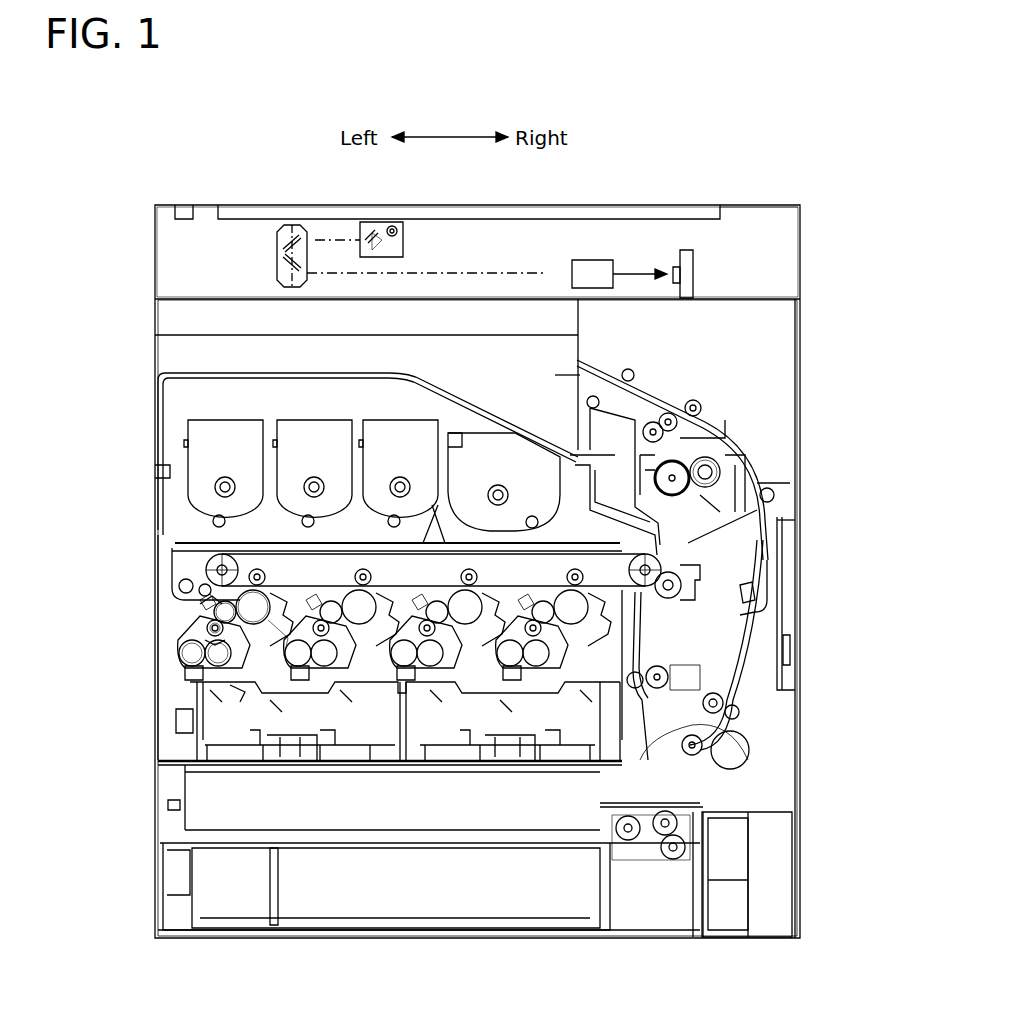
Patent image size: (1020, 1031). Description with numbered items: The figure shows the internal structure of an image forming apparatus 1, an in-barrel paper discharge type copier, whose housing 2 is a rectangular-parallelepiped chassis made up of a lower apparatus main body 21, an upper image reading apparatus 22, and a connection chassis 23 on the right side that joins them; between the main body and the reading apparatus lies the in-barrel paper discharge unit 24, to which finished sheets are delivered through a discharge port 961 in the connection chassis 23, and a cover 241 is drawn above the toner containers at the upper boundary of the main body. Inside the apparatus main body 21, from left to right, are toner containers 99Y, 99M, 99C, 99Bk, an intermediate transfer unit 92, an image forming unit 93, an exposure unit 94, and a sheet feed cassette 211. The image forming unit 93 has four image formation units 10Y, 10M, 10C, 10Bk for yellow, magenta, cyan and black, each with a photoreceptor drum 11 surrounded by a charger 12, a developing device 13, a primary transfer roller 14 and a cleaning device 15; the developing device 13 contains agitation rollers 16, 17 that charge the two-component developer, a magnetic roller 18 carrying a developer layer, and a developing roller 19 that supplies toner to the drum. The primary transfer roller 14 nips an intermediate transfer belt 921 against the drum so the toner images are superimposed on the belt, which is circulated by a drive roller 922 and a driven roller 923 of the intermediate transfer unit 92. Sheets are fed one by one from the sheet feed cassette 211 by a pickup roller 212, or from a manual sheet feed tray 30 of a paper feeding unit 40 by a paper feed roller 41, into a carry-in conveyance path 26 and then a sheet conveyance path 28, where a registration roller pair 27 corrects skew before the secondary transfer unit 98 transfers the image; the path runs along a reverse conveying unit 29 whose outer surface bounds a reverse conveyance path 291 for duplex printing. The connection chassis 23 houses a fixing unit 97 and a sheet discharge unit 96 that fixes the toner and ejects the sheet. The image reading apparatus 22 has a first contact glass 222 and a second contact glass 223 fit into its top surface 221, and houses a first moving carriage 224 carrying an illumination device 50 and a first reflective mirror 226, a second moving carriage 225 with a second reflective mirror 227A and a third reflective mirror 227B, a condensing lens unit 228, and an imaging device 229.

The image forming apparatus 1 is at (716, 155).
The housing 2 is at (155, 452).
The photoreceptor drum 11 is at (268, 590).
The charger 12 is at (283, 636).
The developing device 13 is at (262, 636).
The primary transfer roller 14 is at (238, 600).
The cleaning device 15 is at (270, 598).
The agitation roller 16 is at (232, 686).
The agitation roller 17 is at (192, 660).
The magnetic roller 18 is at (205, 643).
The developing roller 19 is at (200, 606).
The image formation unit 10Y is at (192, 625).
The image formation unit 10M is at (348, 593).
The image formation unit 10C is at (454, 593).
The image formation unit 10Bk is at (560, 593).
The apparatus main body 21 is at (160, 805).
The image reading apparatus 22 is at (800, 268).
The connection chassis 23 is at (800, 373).
The in-barrel paper discharge unit 24 is at (560, 314).
The carry-in conveyance path 26 is at (700, 804).
The registration roller pair 27 is at (655, 702).
The sheet conveyance path 28 is at (643, 657).
The reverse conveying unit 29 is at (745, 568).
The sheet feed tray 30 is at (798, 594).
The paper feeding unit 40 is at (780, 772).
The paper feed roller 41 is at (750, 748).
The illumination device 50 is at (404, 234).
The intermediate transfer unit 92 is at (160, 560).
The image forming unit 93 is at (150, 704).
The exposure unit 94 is at (176, 728).
The sheet discharge unit 96 is at (662, 410).
The fixing unit 97 is at (700, 427).
The secondary transfer unit 98 is at (775, 512).
The toner container 99Y is at (218, 420).
The toner container 99M is at (312, 420).
The toner container 99C is at (375, 420).
The toner container 99Bk is at (467, 434).
The sheet feed cassette 211 is at (165, 905).
The pickup roller 212 is at (622, 850).
The top surface 221 is at (770, 206).
The first contact glass 222 is at (180, 205).
The second contact glass 223 is at (228, 218).
The first moving carriage 224 is at (404, 248).
The second moving carriage 225 is at (296, 226).
The first reflective mirror 226 is at (368, 260).
The second reflective mirror 227A is at (282, 243).
The third reflective mirror 227B is at (282, 276).
The condensing lens unit 228 is at (588, 258).
The imaging device 229 is at (686, 250).
The cover 241 is at (293, 375).
The reverse conveyance path 291 is at (743, 592).
The intermediate transfer belt 921 is at (350, 585).
The drive roller 922 is at (648, 590).
The driven roller 923 is at (165, 590).
The discharge port 961 is at (582, 362).